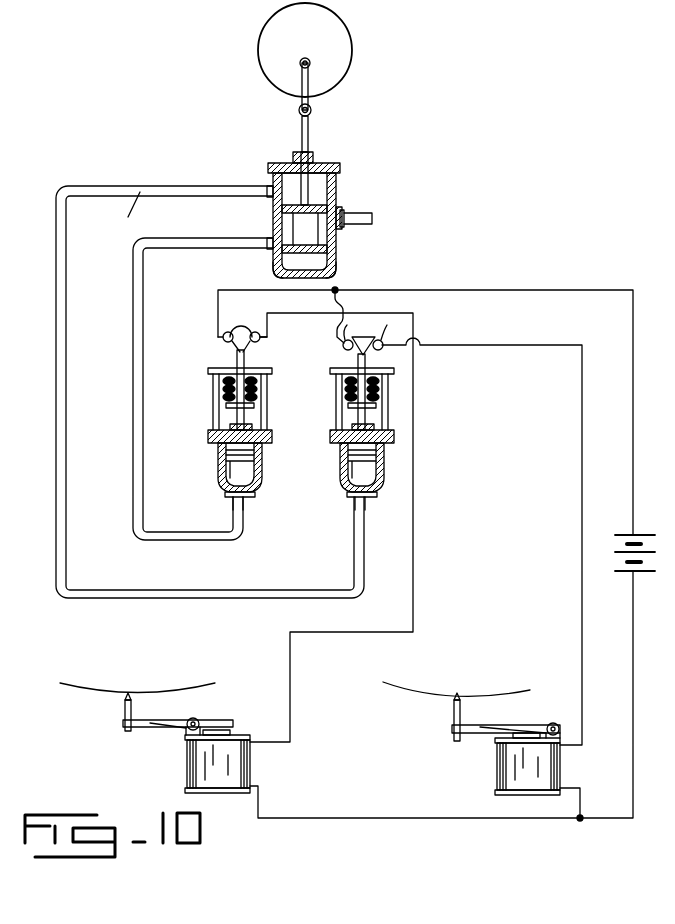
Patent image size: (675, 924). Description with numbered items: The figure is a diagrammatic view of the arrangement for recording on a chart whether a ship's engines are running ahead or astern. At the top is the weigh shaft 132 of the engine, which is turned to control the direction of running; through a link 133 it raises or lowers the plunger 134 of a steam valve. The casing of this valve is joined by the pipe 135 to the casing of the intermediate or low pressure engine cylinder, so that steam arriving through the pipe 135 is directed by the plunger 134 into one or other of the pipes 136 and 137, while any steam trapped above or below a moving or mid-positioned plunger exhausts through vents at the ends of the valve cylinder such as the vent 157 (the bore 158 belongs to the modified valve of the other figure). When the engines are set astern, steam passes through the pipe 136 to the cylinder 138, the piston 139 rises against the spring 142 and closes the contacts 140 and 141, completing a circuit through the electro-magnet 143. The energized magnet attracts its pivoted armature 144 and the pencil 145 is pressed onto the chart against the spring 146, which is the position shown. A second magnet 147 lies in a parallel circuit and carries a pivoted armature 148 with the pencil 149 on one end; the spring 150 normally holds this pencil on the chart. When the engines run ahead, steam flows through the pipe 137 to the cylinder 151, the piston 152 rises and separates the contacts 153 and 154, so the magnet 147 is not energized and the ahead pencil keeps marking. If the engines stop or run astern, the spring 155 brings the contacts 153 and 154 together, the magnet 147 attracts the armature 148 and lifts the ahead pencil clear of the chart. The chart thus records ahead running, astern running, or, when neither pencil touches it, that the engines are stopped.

The weigh shaft 132 is at (344, 62).
The link 133 is at (308, 82).
The bore 158 is at (314, 161).
The plunger 134 is at (305, 218).
The pipe 135 is at (365, 221).
The vent 157 is at (330, 272).
The pipe 137 is at (63, 256).
The pipe 136 is at (140, 286).
The contact 141 is at (254, 332).
The contact 140 is at (247, 340).
The spring 142 is at (250, 392).
The cylinder 138 is at (262, 468).
The piston 139 is at (228, 472).
The contact 154 is at (365, 334).
The contact 153 is at (357, 352).
The spring 155 is at (373, 398).
The piston 152 is at (384, 462).
The cylinder 151 is at (384, 476).
The electro-magnet 143 is at (250, 760).
The pivoted armature 144 is at (175, 722).
The spring 146 is at (170, 727).
The pencil 145 is at (124, 712).
The magnet 147 is at (496, 778).
The pivoted armature 148 is at (498, 725).
The spring 150 is at (487, 732).
The pencil 149 is at (452, 712).